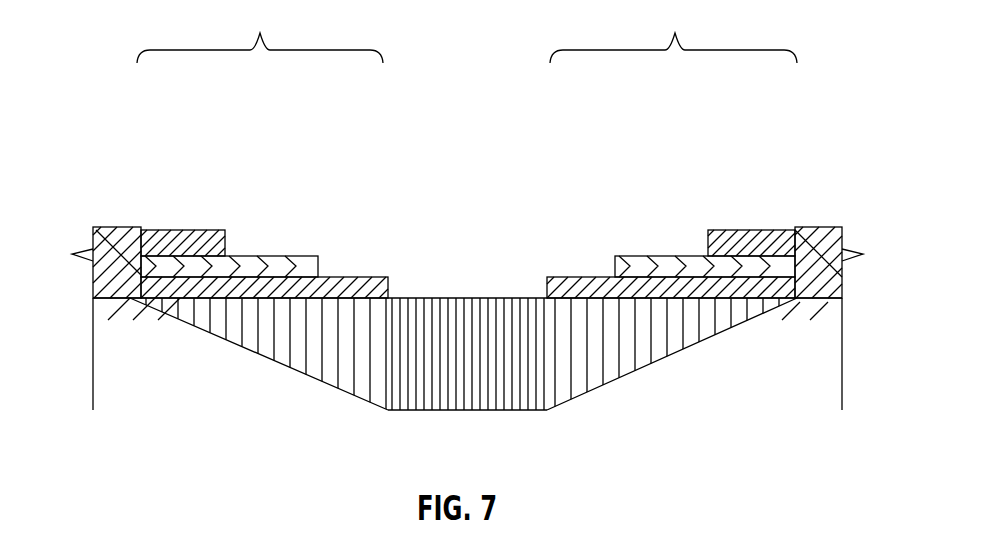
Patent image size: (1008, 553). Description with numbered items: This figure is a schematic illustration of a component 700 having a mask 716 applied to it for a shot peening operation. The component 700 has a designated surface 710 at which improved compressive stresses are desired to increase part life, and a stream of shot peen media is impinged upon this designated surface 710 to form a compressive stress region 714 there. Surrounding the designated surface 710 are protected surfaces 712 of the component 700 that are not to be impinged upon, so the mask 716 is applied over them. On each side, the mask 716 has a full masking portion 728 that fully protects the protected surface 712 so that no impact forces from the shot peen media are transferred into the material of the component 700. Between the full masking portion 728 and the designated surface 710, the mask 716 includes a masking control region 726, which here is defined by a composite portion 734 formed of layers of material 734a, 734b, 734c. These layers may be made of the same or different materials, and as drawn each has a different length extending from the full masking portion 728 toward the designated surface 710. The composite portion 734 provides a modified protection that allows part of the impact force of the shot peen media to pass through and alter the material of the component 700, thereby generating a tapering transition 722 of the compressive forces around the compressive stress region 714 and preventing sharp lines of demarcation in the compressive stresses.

The component 700 is at (807, 308).
The designated surface 710 is at (463, 347).
The protected surfaces 712 is at (104, 284).
The compressive stress region 714 is at (480, 402).
The mask 716 is at (461, 215).
The tapering transition 722 is at (298, 360).
The masking control region 726 is at (467, 31).
The full masking portion 728 is at (117, 262).
The composite portion 734 is at (468, 221).
The layer of material 734a is at (378, 282).
The layer of material 734b is at (295, 265).
The layer of material 734c is at (190, 235).